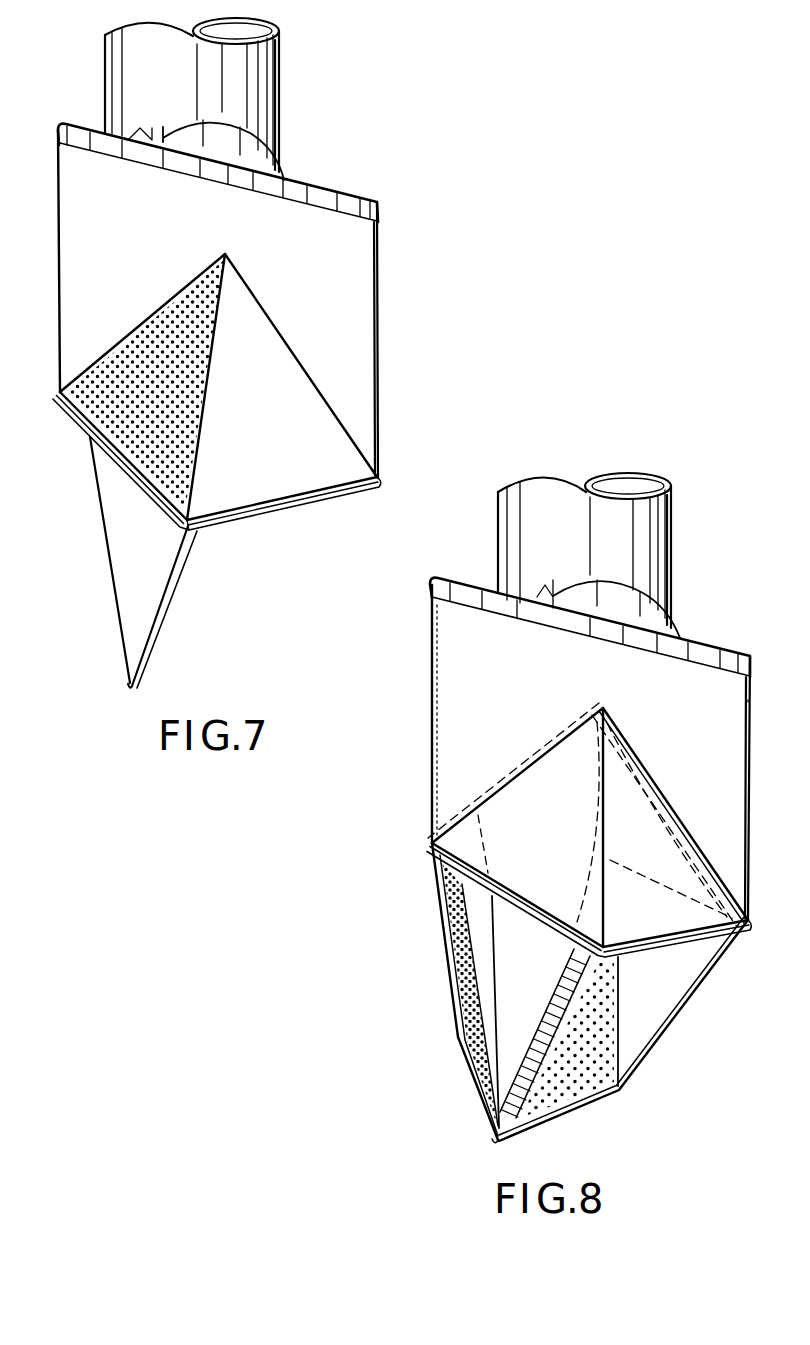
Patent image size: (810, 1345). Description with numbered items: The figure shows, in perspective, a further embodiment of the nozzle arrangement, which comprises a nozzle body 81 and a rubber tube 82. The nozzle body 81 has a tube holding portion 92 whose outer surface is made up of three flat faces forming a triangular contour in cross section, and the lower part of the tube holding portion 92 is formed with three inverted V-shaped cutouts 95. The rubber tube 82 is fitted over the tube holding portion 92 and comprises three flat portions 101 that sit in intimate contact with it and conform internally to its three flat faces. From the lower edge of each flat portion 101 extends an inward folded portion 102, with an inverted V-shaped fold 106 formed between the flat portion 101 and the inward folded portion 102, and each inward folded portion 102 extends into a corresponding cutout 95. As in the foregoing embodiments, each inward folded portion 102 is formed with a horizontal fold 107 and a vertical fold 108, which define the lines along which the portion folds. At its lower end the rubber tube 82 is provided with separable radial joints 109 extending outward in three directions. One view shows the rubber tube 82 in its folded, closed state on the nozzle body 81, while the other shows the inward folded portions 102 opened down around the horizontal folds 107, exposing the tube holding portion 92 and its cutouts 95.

In FIG. 7, the nozzle body 81 is at (280, 89).
In FIG. 8, the nozzle body 81 is at (673, 539).
In FIG. 7, the rubber tube 82 is at (381, 301).
In FIG. 8, the rubber tube 82 is at (432, 757).
In FIG. 7, the flat portion 101 is at (352, 250).
In FIG. 8, the flat portion 101 is at (723, 708).
In FIG. 7, the inward folded portion 102 is at (293, 468).
In FIG. 8, the inward folded portion 102 is at (623, 813).
In FIG. 7, the inverted V-shaped fold 106 is at (338, 413).
In FIG. 8, the inverted V-shaped fold 106 is at (660, 826).
In FIG. 7, the horizontal fold 107 is at (291, 494).
In FIG. 8, the horizontal fold 107 is at (545, 902).
In FIG. 7, the vertical fold 108 is at (206, 401).
In FIG. 8, the vertical fold 108 is at (602, 841).
In FIG. 7, the separable radial joint 109 is at (232, 522).
In FIG. 8, the inverted V-shaped cutout 95 is at (470, 1070).
In FIG. 8, the tube holding portion 92 is at (537, 1068).